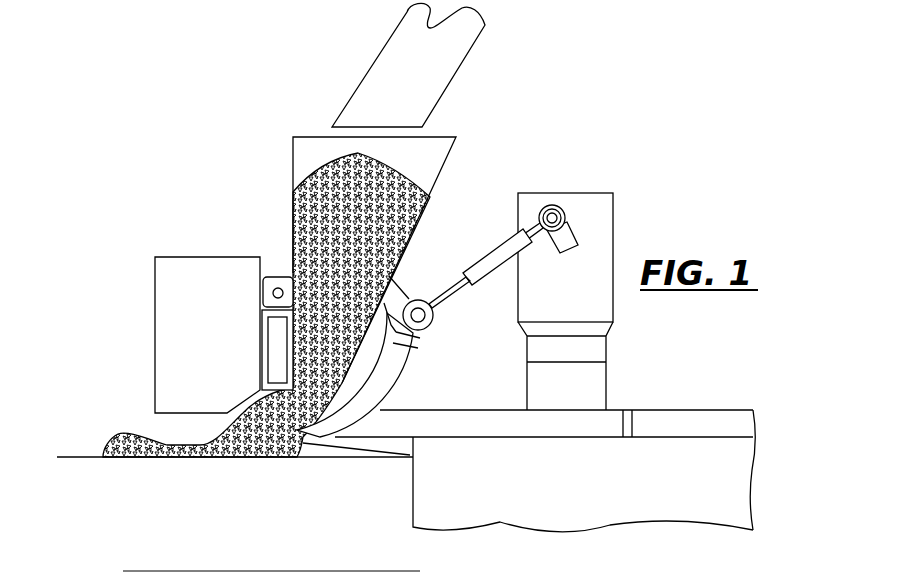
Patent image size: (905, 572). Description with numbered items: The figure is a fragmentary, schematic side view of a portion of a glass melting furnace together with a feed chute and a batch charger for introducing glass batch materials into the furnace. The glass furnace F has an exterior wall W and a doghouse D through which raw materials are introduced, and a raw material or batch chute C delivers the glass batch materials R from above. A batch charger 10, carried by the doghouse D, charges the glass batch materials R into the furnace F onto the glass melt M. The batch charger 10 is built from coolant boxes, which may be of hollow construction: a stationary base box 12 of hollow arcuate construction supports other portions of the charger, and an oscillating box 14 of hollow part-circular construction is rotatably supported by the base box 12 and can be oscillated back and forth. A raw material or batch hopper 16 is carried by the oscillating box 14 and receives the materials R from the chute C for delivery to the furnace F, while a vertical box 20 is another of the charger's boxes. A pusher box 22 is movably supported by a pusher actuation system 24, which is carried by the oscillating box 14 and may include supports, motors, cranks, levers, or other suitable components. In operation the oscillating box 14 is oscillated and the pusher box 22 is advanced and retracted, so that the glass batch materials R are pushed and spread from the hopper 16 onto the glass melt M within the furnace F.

The batch charger 10 is at (683, 190).
The base box 12 is at (693, 403).
The oscillating box 14 is at (613, 403).
The batch hopper 16 is at (267, 160).
The vertical box 20 is at (258, 353).
The pusher box 22 is at (418, 380).
The actuation system 24 is at (593, 178).
The batch chute C is at (352, 50).
The glass batch materials R is at (300, 208).
The glass furnace F is at (153, 210).
The exterior wall W is at (137, 348).
The glass melt M is at (77, 457).
The doghouse D is at (395, 490).